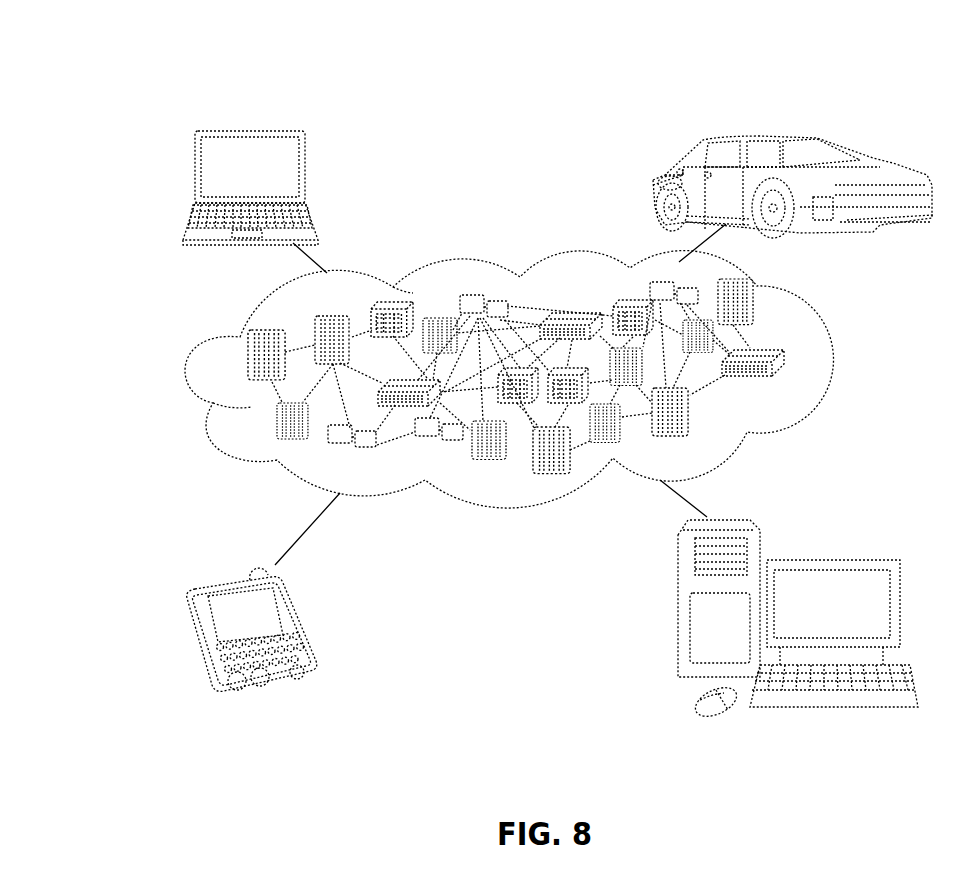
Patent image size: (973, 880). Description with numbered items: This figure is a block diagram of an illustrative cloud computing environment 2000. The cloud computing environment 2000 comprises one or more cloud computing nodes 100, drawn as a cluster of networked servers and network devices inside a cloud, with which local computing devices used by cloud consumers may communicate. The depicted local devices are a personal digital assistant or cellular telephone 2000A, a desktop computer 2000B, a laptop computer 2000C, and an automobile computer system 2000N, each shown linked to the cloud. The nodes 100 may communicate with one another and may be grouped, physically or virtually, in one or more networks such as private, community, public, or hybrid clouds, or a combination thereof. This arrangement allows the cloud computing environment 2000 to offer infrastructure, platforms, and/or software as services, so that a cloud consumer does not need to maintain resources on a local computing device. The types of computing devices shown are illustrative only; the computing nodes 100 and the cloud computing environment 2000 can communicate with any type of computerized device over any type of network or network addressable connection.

The cloud computing environment 2000 is at (129, 52).
The cloud computing nodes 100 is at (805, 388).
The personal digital assistant (PDA) or cellular telephone 2000A is at (305, 628).
The desktop computer 2000B is at (828, 560).
The laptop computer 2000C is at (305, 176).
The automobile computer system 2000N is at (655, 186).